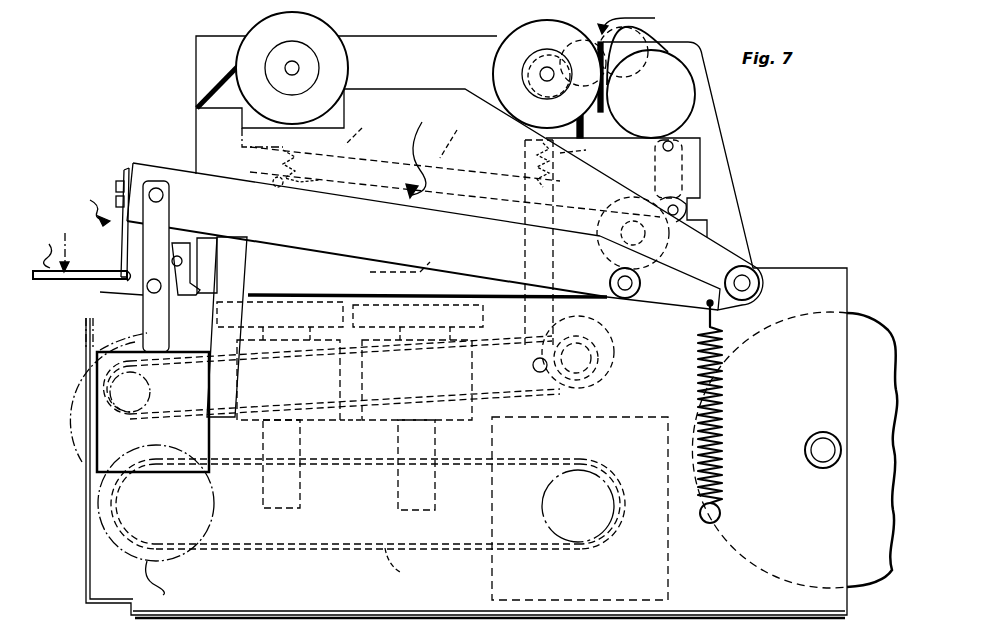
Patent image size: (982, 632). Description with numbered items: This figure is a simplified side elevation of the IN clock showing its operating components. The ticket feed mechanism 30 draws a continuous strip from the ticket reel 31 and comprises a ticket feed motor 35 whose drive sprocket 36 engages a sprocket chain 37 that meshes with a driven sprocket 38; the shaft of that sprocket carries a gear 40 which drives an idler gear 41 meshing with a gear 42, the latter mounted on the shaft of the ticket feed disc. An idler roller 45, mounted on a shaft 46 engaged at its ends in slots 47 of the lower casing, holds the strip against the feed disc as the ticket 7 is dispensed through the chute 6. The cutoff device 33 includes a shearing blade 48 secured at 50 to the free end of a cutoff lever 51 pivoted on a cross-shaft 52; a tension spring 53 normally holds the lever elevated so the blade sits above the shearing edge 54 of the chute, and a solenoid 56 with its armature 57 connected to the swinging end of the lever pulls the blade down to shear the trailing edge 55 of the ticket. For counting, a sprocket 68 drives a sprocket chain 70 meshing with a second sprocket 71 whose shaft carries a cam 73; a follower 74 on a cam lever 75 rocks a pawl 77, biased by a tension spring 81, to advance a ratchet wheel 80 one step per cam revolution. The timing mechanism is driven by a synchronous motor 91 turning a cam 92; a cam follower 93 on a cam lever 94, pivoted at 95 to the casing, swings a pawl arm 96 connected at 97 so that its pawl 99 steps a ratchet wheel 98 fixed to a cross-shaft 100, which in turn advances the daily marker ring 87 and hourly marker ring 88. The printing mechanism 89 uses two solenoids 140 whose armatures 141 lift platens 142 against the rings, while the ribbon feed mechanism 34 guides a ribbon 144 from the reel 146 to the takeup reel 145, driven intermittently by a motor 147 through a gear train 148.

The ticket-dispensing chute 6 is at (44, 247).
The ticket 7 is at (66, 241).
The ticket feed mechanism 30 is at (423, 150).
The ticket reel 31 is at (862, 312).
The cutoff device 33 is at (87, 205).
The ribbon feed mechanism 34 is at (737, 94).
The ticket feed motor 35 is at (668, 595).
The drive sprocket 36 is at (545, 502).
The sprocket chain 37 is at (405, 567).
The driven sprocket 38 is at (190, 545).
The gear 40 is at (167, 584).
The idler gear 41 is at (95, 450).
The gear 42 is at (88, 333).
The idler roller 45 is at (178, 252).
The shaft 46 is at (205, 245).
The slots 47 is at (195, 268).
The shearing blade 48 is at (121, 248).
The securing means 50 is at (118, 180).
The cutoff lever 51 is at (422, 236).
The cross-shaft 52 is at (620, 297).
The tension spring 53 is at (724, 417).
The shearing edge 54 is at (105, 292).
The trailing edge 55 is at (90, 282).
The solenoid 56 is at (100, 462).
The armature 57 is at (165, 303).
The sprocket 68 is at (150, 389).
The sprocket chain 70 is at (300, 380).
The second sprocket 71 is at (578, 380).
The cam 73 is at (614, 365).
The follower 74 is at (532, 372).
The cam lever 75 is at (522, 265).
The pawl 77 is at (535, 145).
The ratchet wheel 80 is at (455, 182).
The tension spring 81 is at (585, 152).
The annular marker ring 87 is at (425, 268).
The annular marker ring 88 is at (270, 265).
The printing mechanism 89 is at (347, 490).
The synchronous motor 91 is at (683, 258).
The cam 92 is at (626, 196).
The cam follower 93 is at (706, 218).
The cam lever 94 is at (682, 177).
The pivot connection 95 is at (668, 141).
The pawl arm 96 is at (459, 133).
The pivot connection 97 is at (682, 208).
The ratchet wheel 98 is at (311, 170).
The pawl 99 is at (363, 127).
The cross-shaft 100 is at (276, 178).
The solenoid 140 is at (375, 428).
The armature 141 is at (282, 510).
The platen 142 is at (354, 373).
The ribbon 144 is at (213, 97).
The takeup reel 145 is at (549, 79).
The reel 146 is at (292, 68).
The motor 147 is at (646, 82).
The gear train 148 is at (643, 21).